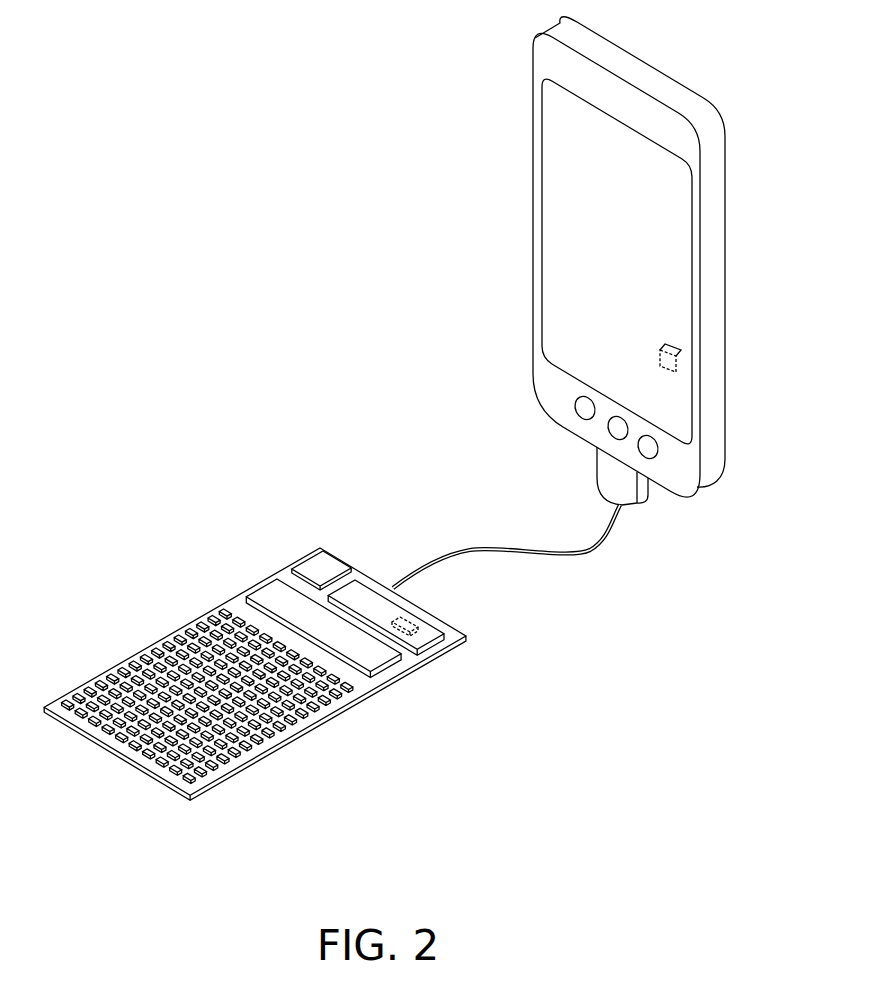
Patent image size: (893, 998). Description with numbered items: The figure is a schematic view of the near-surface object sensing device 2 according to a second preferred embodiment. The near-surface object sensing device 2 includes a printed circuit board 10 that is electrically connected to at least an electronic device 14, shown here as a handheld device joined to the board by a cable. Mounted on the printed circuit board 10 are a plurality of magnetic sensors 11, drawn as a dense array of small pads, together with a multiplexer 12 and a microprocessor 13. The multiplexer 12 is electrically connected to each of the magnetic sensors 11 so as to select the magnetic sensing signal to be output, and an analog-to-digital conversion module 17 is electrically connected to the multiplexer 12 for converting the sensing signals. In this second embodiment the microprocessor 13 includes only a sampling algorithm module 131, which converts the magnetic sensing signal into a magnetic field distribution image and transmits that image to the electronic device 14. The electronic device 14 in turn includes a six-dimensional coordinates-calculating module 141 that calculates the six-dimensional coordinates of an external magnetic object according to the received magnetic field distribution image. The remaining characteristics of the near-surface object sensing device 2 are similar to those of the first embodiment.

The near-surface object sensing device 2 is at (372, 717).
The printed circuit board 10 is at (297, 738).
The magnetic sensors 11 is at (183, 635).
The multiplexer 12 is at (278, 592).
The microprocessor 13 is at (386, 617).
The sampling algorithm module 131 is at (410, 630).
The electronic device 14 is at (567, 235).
The six-dimensional coordinates-calculating module 141 is at (677, 362).
The analog-to-digital conversion module 17 is at (327, 573).